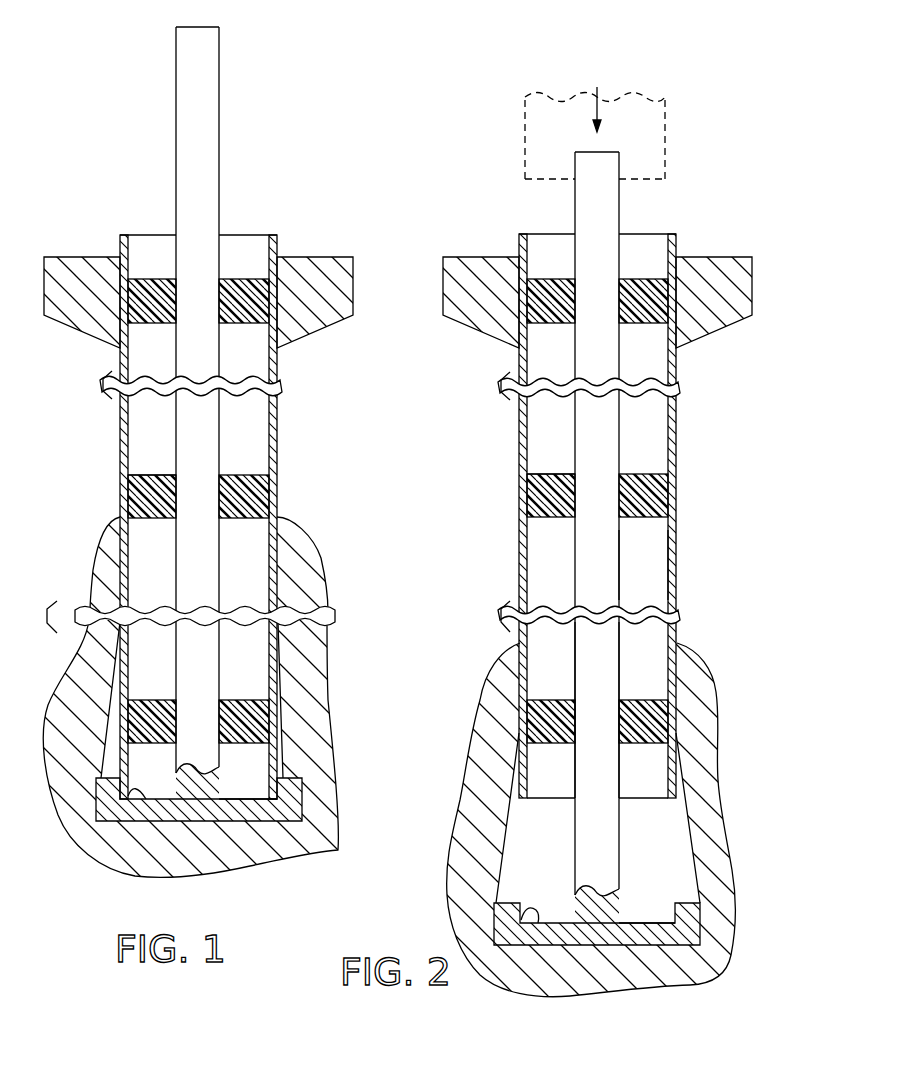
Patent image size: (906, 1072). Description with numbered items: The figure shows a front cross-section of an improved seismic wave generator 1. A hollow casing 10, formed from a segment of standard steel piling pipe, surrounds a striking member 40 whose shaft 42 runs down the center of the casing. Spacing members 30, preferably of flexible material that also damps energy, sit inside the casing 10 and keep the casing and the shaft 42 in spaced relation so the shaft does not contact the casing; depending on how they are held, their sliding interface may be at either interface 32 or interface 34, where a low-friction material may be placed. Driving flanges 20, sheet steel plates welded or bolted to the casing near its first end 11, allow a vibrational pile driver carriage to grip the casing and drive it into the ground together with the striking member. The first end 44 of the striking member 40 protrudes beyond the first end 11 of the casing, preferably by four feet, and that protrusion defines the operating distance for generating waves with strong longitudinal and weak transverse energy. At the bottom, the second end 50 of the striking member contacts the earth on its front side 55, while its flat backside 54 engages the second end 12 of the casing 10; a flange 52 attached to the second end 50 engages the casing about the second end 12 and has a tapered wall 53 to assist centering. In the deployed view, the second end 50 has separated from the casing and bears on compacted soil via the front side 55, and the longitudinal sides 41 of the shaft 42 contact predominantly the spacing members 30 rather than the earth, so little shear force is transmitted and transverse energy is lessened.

In FIG. 1, the seismic wave generator 1 is at (64, 204).
In FIG. 2, the seismic wave generator 1 is at (466, 204).
In FIG. 1, the hollow casing 10 is at (277, 410).
In FIG. 2, the hollow casing 10 is at (677, 410).
In FIG. 1, the first end of casing 11 is at (123, 235).
In FIG. 2, the first end of casing 11 is at (520, 234).
In FIG. 1, the second end of casing 12 is at (282, 808).
In FIG. 2, the second end of casing 12 is at (678, 803).
In FIG. 1, the driving flanges 20 is at (318, 265).
In FIG. 2, the driving flanges 20 is at (713, 265).
In FIG. 1, the spacing members 30 is at (252, 323).
In FIG. 2, the spacing members 30 is at (652, 323).
In FIG. 1, the interface 32 is at (130, 475).
In FIG. 2, the interface 32 is at (530, 475).
In FIG. 1, the interface 34 is at (175, 470).
In FIG. 2, the interface 34 is at (575, 470).
In FIG. 2, the striking member 40 is at (655, 571).
In FIG. 2, the longitudinal sides of shaft 41 is at (623, 668).
In FIG. 1, the shaft 42 is at (210, 167).
In FIG. 2, the shaft 42 is at (612, 197).
In FIG. 1, the first end of striking member 44 is at (190, 27).
In FIG. 2, the first end of striking member 44 is at (592, 152).
In FIG. 1, the second end of striking member 50 is at (96, 768).
In FIG. 2, the second end of striking member 50 is at (494, 888).
In FIG. 1, the flange 52 is at (280, 800).
In FIG. 2, the flange 52 is at (683, 902).
In FIG. 1, the tapered wall 53 is at (143, 790).
In FIG. 2, the tapered wall 53 is at (542, 912).
In FIG. 1, the backside of second end 54 is at (243, 795).
In FIG. 2, the backside of second end 54 is at (645, 913).
In FIG. 1, the front side 55 is at (313, 850).
In FIG. 2, the front side 55 is at (707, 973).